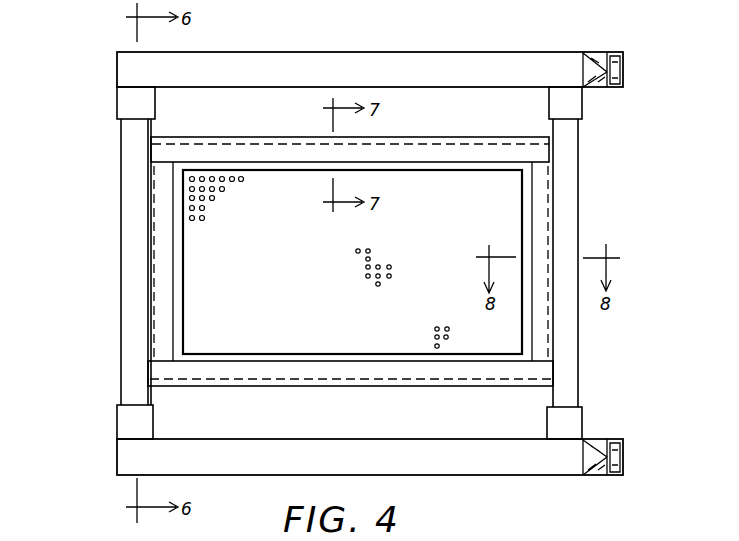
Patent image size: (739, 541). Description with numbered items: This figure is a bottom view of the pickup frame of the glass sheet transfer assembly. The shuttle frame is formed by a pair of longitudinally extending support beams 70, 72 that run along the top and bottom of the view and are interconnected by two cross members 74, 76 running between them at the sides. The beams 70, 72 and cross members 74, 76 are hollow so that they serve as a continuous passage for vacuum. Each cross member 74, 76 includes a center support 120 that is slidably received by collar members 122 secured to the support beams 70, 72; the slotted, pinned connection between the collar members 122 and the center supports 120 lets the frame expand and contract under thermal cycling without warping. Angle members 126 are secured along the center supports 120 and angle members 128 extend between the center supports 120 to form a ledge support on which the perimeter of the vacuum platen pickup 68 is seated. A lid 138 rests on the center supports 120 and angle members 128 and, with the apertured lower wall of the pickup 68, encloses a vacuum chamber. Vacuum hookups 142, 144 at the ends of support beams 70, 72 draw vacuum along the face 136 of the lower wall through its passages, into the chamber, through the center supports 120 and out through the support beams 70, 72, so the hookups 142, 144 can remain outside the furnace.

The support beam 70 is at (410, 51).
The support beam 72 is at (472, 476).
The cross member 74 is at (120, 178).
The cross member 76 is at (580, 147).
The vacuum platen pickup 68 is at (522, 339).
The center support 120 is at (120, 256).
The collar member 122 is at (117, 104).
The angle member 126 is at (175, 228).
The angle member 128 is at (283, 137).
The face 136 is at (198, 303).
The lid 138 is at (696, 531).
The vacuum hookup 142 is at (593, 55).
The vacuum hookup 144 is at (593, 477).